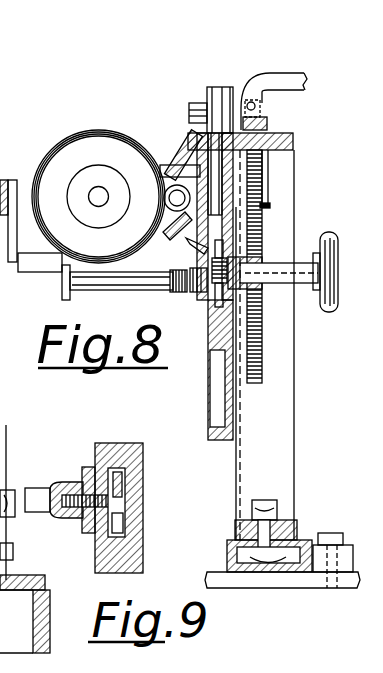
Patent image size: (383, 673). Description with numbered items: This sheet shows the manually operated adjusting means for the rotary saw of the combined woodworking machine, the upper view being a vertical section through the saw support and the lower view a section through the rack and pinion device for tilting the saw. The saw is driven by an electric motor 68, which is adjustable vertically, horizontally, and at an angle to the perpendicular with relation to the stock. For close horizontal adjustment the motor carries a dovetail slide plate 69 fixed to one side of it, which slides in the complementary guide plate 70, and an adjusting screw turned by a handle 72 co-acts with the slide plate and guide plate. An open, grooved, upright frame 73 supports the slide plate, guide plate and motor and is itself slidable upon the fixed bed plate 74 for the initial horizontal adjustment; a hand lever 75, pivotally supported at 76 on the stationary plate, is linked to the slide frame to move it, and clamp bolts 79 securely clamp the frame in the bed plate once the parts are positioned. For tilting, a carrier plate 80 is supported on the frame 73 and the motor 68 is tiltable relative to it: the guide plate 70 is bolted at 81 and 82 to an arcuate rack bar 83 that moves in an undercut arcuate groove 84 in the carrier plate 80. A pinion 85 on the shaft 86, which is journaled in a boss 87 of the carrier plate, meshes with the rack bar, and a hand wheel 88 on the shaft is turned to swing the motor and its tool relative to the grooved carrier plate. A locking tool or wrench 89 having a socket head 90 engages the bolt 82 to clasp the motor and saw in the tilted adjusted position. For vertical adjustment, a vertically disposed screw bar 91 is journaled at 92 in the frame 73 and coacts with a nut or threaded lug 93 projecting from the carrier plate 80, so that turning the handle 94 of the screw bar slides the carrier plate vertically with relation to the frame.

In FIG. 8, the electric motor 68 is at (93, 145).
In FIG. 8, the dovetail slide plate 69 is at (173, 172).
In FIG. 8, the guide plate 70 is at (185, 140).
In FIG. 8, the handle 72 is at (6, 180).
In FIG. 8, the upright frame 73 is at (289, 424).
In FIG. 8, the bed plate 74 is at (308, 535).
In FIG. 9, the hand lever 75 is at (3, 446).
In FIG. 9, the pivot 76 is at (5, 486).
In FIG. 8, the clamp bolts 79 is at (278, 507).
In FIG. 8, the carrier plate 80 is at (227, 393).
In FIG. 8, the bolt 81 is at (201, 103).
In FIG. 8, the bolt 82 is at (194, 294).
In FIG. 9, the bolt 82 is at (127, 500).
In FIG. 8, the arcuate rack bar 83 is at (262, 240).
In FIG. 9, the arcuate rack bar 83 is at (127, 515).
In FIG. 9, the undercut arcuate groove 84 is at (110, 548).
In FIG. 8, the pinion 85 is at (200, 299).
In FIG. 8, the shaft 86 is at (240, 298).
In FIG. 8, the boss 87 is at (278, 267).
In FIG. 8, the hand wheel 88 is at (331, 307).
In FIG. 8, the locking tool or wrench 89 is at (113, 281).
In FIG. 9, the locking tool or wrench 89 is at (42, 500).
In FIG. 8, the socket head 90 is at (190, 277).
In FIG. 9, the socket head 90 is at (68, 480).
In FIG. 8, the screw bar 91 is at (263, 172).
In FIG. 8, the journal 92 is at (266, 126).
In FIG. 8, the nut or threaded lug 93 is at (270, 206).
In FIG. 8, the handle 94 is at (276, 86).